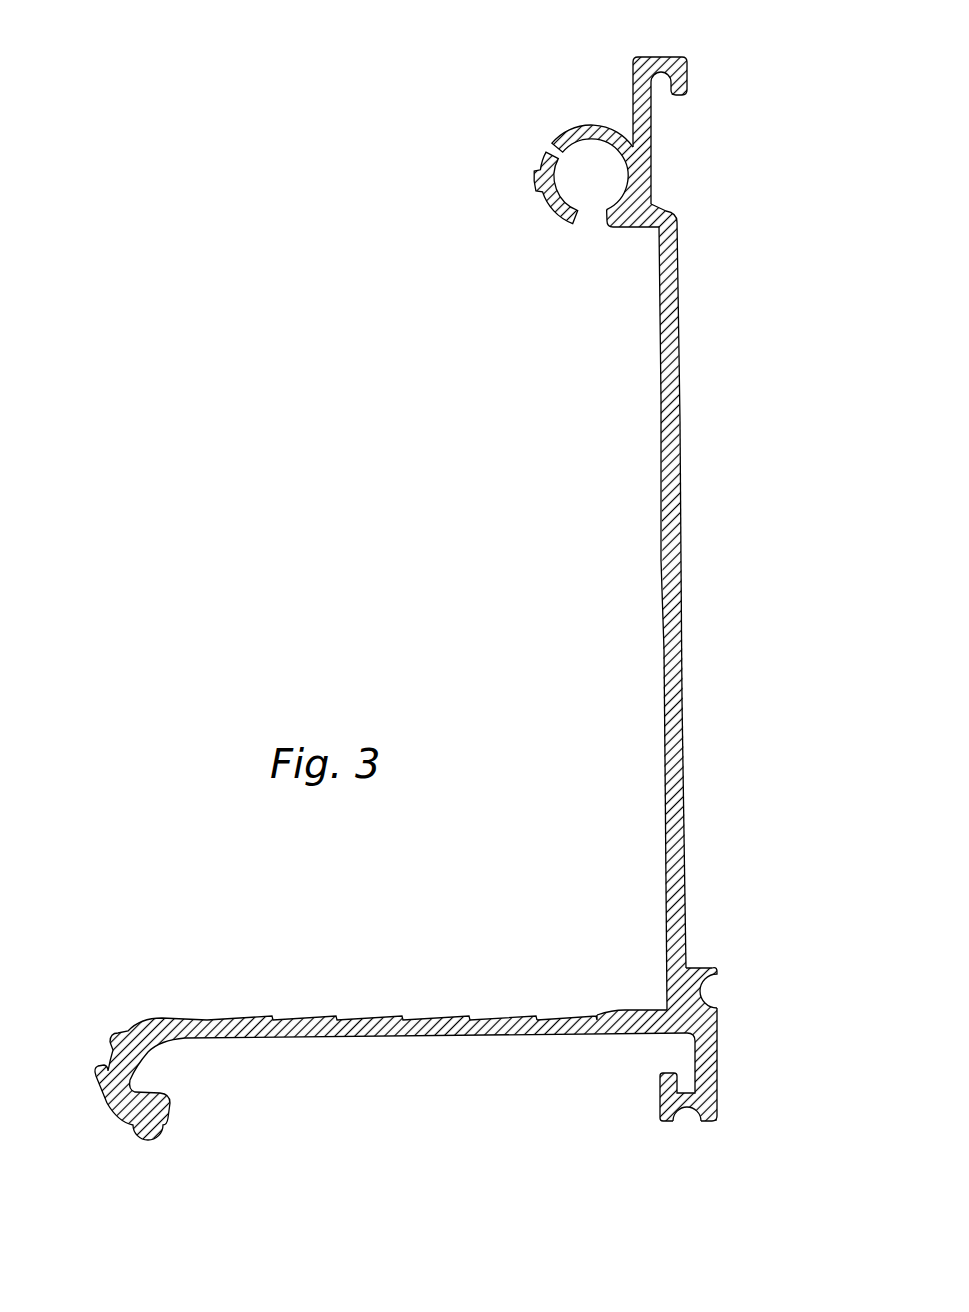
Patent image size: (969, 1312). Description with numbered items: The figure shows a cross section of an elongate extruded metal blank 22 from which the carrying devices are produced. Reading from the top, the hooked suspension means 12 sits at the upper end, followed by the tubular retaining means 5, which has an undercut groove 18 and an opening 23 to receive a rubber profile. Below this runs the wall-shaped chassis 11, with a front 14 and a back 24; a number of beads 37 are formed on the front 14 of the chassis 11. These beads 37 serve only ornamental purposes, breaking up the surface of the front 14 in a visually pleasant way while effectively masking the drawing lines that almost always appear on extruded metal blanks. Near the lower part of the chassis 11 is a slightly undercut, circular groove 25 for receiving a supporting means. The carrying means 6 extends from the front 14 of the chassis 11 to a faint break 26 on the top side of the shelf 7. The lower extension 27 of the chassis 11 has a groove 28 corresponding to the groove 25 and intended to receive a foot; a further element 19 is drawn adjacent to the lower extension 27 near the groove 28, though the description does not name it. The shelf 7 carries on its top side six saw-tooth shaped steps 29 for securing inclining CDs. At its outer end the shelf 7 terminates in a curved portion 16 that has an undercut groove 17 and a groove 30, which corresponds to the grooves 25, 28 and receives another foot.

The tubular retaining means 5 is at (508, 208).
The carrying means 6 is at (638, 1002).
The shelf 7 is at (380, 1036).
The wall-shaped chassis 11 is at (678, 415).
The hooked suspension means 12 is at (687, 82).
The front 14 is at (660, 483).
The curved portion 16 is at (133, 1013).
The undercut groove 17 is at (93, 1055).
The undercut groove 18 is at (540, 160).
The bottom retaining block 19 is at (667, 1073).
The extruded metal blank 22 is at (703, 540).
The opening 23 is at (598, 230).
The back 24 is at (687, 633).
The circular groove 25 is at (713, 990).
The faint break 26 is at (597, 1007).
The lower extension 27 is at (722, 1070).
The groove 28 is at (690, 1117).
The saw-tooth shaped steps 29 is at (543, 1010).
The groove 30 is at (148, 1123).
The beads 37 is at (663, 705).